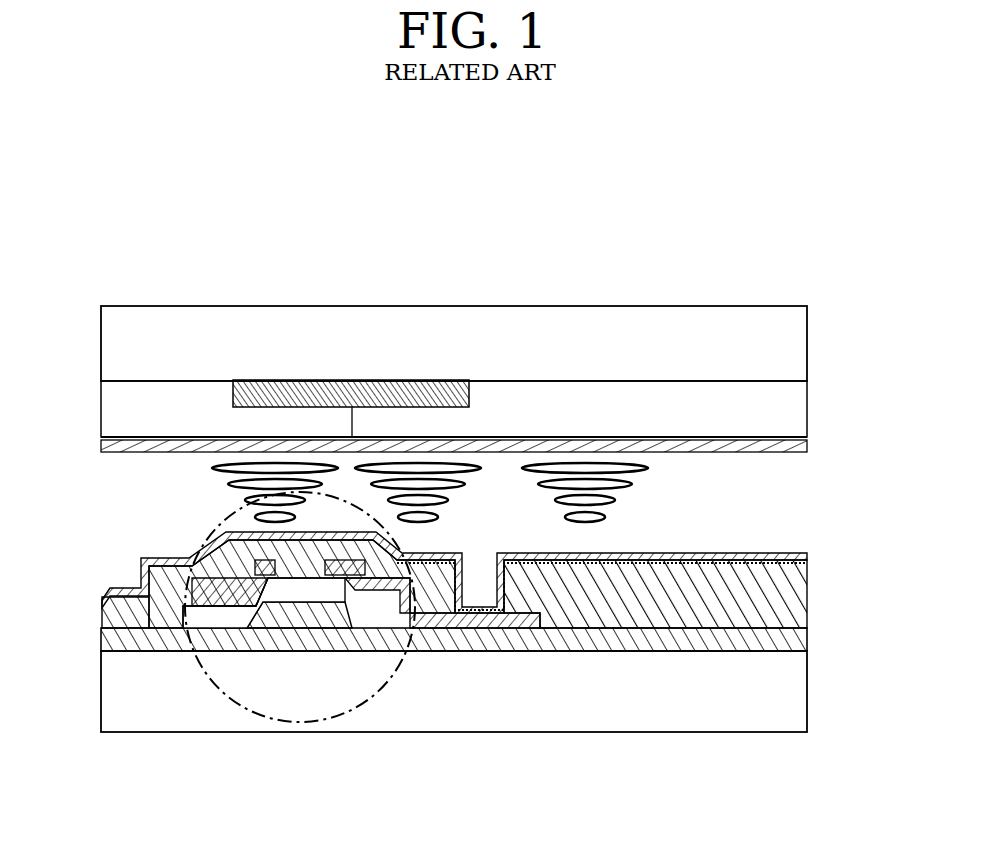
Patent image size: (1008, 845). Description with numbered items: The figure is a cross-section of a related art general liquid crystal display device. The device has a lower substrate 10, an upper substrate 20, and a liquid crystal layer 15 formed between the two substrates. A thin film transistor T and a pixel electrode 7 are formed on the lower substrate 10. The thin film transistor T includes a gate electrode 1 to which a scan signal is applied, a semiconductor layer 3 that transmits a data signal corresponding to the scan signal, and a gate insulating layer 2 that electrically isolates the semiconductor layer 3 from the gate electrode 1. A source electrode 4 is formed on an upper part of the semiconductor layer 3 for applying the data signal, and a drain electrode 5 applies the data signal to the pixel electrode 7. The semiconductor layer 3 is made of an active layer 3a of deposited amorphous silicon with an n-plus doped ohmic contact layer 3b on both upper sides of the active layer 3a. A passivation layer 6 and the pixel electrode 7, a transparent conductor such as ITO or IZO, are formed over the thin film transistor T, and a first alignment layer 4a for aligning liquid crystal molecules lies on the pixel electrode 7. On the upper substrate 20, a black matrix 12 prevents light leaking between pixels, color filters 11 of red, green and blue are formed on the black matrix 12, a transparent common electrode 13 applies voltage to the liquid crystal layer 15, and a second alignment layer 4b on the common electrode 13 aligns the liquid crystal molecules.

The gate electrode 1 is at (283, 612).
The gate insulating layer 2 is at (807, 631).
The semiconductor layer 3 is at (304, 693).
The active layer 3a is at (397, 600).
The ohmic contact layer 3b is at (344, 580).
The source electrode 4 is at (205, 615).
The first alignment layer 4a is at (807, 553).
The second alignment layer 4b is at (807, 450).
The drain electrode 5 is at (478, 628).
The passivation layer 6 is at (807, 600).
The pixel electrode 7 is at (807, 562).
The lower substrate 10 is at (807, 688).
The color filters 11 is at (807, 398).
The black matrix 12 is at (413, 380).
The common electrode 13 is at (807, 437).
The liquid crystal layer 15 is at (807, 502).
The upper substrate 20 is at (807, 347).
The thin film transistor T is at (200, 529).